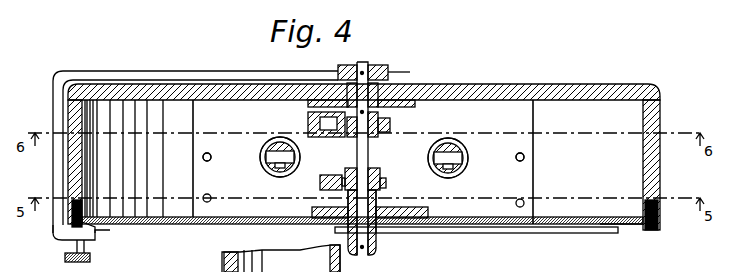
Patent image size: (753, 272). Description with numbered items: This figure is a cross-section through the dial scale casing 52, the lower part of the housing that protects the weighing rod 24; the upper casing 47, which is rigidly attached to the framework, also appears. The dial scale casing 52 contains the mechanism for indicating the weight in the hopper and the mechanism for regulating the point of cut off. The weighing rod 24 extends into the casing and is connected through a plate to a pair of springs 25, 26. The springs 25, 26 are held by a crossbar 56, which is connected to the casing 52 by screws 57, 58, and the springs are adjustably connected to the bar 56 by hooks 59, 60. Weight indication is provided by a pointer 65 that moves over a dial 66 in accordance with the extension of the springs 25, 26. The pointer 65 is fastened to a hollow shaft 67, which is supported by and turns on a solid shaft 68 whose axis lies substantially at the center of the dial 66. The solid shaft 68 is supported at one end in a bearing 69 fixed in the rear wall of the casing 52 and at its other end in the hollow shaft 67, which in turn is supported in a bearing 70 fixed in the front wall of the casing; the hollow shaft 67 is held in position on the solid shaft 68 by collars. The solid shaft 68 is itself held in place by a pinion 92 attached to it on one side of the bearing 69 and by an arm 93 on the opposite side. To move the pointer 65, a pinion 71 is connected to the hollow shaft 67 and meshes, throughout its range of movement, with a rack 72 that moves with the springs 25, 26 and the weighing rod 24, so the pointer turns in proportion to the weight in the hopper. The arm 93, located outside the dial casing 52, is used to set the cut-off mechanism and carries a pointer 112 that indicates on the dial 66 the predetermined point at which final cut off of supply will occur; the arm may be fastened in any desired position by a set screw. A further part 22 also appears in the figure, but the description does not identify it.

The casing plate 22 is at (57, 237).
The weighing rod 24 is at (88, 262).
The spring 25 is at (266, 172).
The spring 26 is at (463, 168).
The upper casing 47 is at (222, 260).
The dial scale casing 52 is at (563, 92).
The crossbar 56 is at (535, 178).
The screw 57 is at (203, 157).
The screw 58 is at (525, 157).
The hook 59 is at (263, 148).
The hook 60 is at (462, 152).
The pointer 65 is at (492, 236).
The dial 66 is at (625, 233).
The hollow shaft 67 is at (380, 200).
The solid shaft 68 is at (370, 62).
The bearing 69 is at (408, 107).
The bearing 70 is at (420, 213).
The pinion 71 is at (386, 183).
The rack 72 is at (320, 182).
The pinion 92 is at (390, 127).
The arm 93 is at (268, 75).
The pointer 112 is at (97, 233).